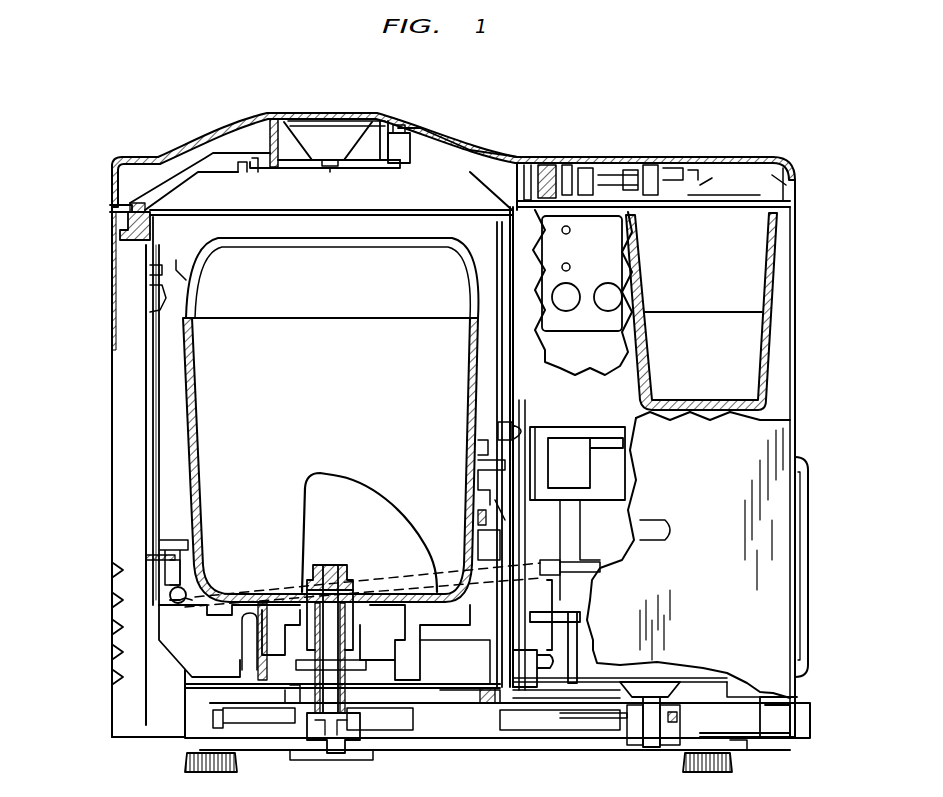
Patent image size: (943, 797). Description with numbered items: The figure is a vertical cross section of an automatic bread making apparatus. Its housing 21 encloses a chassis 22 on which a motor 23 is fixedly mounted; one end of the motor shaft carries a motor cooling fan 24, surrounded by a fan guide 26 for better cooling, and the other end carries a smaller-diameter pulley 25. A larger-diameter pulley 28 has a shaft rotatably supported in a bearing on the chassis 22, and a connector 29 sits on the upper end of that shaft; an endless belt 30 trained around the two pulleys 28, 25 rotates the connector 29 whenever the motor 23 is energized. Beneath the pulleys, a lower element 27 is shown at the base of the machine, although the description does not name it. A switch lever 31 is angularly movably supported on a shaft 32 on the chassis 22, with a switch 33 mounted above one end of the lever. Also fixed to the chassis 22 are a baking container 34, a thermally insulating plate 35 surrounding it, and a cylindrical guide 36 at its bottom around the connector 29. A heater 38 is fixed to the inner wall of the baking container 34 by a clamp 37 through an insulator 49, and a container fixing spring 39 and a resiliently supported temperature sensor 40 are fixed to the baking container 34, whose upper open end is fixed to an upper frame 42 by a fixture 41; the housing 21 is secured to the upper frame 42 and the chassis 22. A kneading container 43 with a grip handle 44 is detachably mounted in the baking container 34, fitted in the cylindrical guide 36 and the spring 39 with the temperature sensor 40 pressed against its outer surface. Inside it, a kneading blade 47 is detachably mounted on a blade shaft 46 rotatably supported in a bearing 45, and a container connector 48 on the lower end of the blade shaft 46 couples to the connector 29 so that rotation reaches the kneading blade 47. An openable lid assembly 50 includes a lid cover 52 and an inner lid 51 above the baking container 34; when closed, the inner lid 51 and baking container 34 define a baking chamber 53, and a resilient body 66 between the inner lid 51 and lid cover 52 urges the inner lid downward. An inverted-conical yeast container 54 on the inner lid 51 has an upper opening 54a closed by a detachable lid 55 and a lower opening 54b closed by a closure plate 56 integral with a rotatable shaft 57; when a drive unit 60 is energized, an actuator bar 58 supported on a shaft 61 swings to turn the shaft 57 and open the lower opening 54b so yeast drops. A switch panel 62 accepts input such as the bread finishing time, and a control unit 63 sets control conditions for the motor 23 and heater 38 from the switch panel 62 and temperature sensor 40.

The housing 21 is at (112, 425).
The chassis 22 is at (724, 684).
The motor 23 is at (562, 683).
The motor cooling fan 24 is at (578, 445).
The smaller-diameter pulley 25 is at (660, 747).
The fan guide 26 is at (522, 415).
The leg 27 is at (348, 760).
The larger-diameter pulley 28 is at (400, 750).
The connector 29 is at (288, 688).
The endless belt 30 is at (612, 718).
The switch lever 31 is at (458, 705).
The shaft 32 is at (487, 705).
The switch 33 is at (527, 688).
The baking container 34 is at (146, 457).
The thermally insulating plate 35 is at (153, 490).
The cylindrical guide 36 is at (238, 635).
The clamp 37 is at (200, 582).
The heater 38 is at (208, 592).
The container fixing spring 39 is at (158, 303).
The temperature sensor 40 is at (475, 508).
The fixture 41 is at (120, 236).
The upper frame 42 is at (112, 205).
The kneading container 43 is at (185, 523).
The grip handle 44 is at (215, 250).
The bearing 45 is at (282, 612).
The blade shaft 46 is at (330, 566).
The kneading blade 47 is at (380, 505).
The container connector 48 is at (400, 643).
The insulator 49 is at (145, 592).
The lid assembly 50 is at (148, 157).
The inner lid 51 is at (240, 175).
The lid cover 52 is at (232, 150).
The baking chamber 53 is at (198, 225).
The yeast container 54 is at (300, 135).
The upper opening 54a is at (376, 121).
The lower opening 54b is at (330, 165).
The lid 55 is at (342, 113).
The closure plate 56 is at (338, 175).
The rotatable shaft 57 is at (398, 175).
The actuator bar 58 is at (512, 163).
The drive unit 60 is at (658, 198).
The shaft 61 is at (560, 165).
The switch panel 62 is at (618, 258).
The control unit 63 is at (640, 245).
The resilient body 66 is at (272, 119).